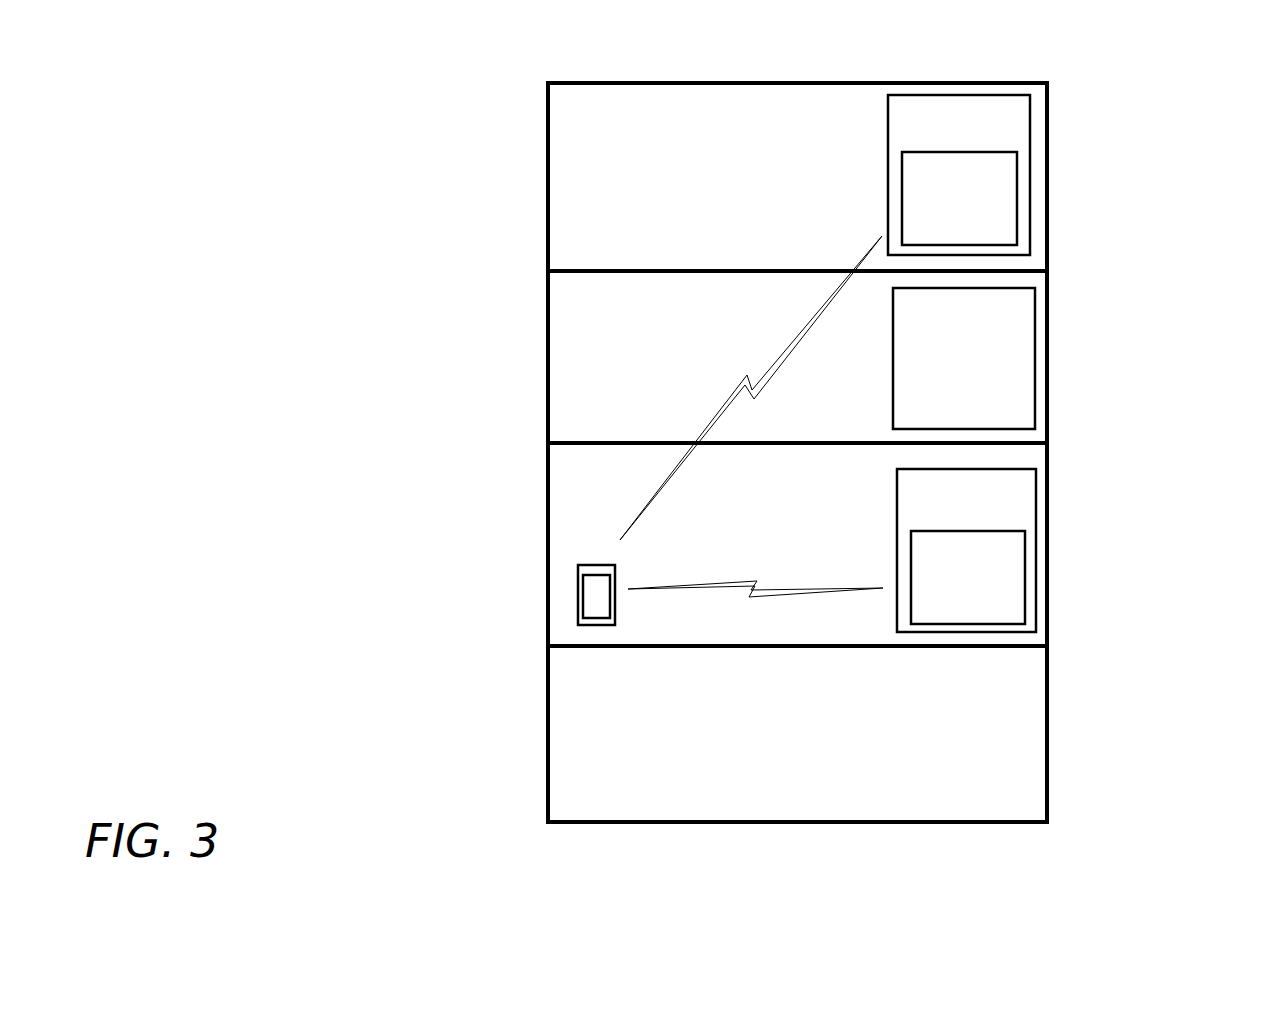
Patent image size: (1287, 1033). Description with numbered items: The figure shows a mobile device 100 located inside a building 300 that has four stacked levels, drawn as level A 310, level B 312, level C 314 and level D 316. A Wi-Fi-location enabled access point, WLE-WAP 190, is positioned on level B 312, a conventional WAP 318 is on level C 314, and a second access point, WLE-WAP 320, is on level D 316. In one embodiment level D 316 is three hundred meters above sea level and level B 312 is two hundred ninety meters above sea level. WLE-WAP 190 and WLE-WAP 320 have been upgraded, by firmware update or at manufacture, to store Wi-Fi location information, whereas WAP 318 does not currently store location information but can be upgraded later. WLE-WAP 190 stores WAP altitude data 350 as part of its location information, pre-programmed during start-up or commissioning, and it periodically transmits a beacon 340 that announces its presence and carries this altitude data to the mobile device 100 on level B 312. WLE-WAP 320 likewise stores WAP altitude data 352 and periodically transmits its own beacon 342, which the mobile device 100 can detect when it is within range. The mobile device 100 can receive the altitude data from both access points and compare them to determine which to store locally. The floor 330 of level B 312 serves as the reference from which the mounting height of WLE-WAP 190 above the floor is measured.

The building 300 is at (538, 77).
The level A 310 is at (1047, 787).
The floor 330 is at (772, 647).
The level B 312 is at (1047, 575).
The level C 314 is at (1047, 425).
The level D 316 is at (1047, 200).
The WLE-WAP 320 is at (959, 175).
The second WAP altitude data 352 is at (959, 198).
The WAP 318 is at (964, 358).
The WLE-WAP 190 is at (966, 550).
The WAP altitude data 350 is at (968, 577).
The mobile device 100 is at (578, 578).
The beacon 340 is at (752, 582).
The beacon 342 is at (740, 387).